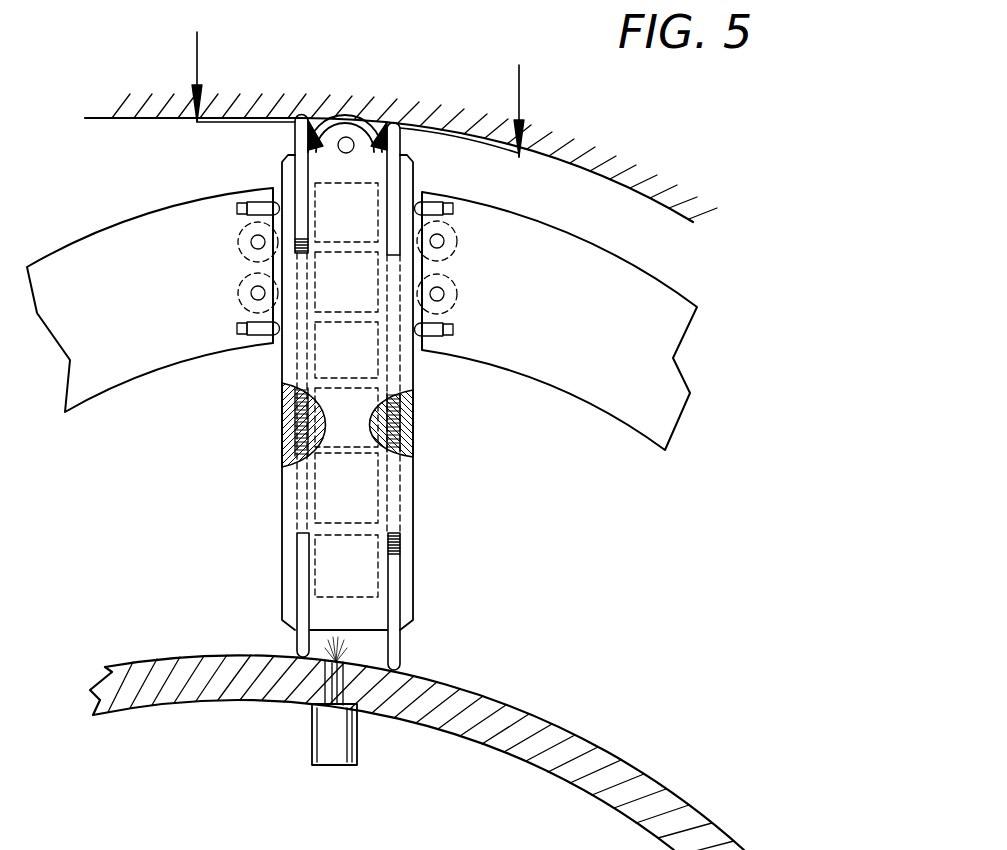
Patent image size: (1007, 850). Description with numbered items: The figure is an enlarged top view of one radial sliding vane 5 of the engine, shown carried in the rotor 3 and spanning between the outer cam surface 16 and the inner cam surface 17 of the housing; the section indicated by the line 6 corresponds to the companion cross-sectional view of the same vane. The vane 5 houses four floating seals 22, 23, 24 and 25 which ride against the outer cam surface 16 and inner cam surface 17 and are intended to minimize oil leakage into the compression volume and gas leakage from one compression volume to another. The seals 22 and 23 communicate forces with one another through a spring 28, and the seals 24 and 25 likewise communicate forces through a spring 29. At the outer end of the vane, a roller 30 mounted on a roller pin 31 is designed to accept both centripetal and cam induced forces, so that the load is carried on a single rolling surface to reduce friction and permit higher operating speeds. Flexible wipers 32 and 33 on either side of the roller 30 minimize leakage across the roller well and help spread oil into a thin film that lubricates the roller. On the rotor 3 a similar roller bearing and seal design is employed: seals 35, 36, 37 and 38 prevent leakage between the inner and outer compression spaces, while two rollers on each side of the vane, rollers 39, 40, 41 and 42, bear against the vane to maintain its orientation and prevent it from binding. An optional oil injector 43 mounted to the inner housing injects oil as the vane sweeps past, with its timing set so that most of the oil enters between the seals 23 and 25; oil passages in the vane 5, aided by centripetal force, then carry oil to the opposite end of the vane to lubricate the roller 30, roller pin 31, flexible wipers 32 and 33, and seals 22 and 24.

The rotor 3 is at (153, 375).
The vane 5 is at (415, 525).
The section line 6- 6 is at (358, 94).
The outer cam surface 16 is at (140, 660).
The inner cam surface 17 is at (125, 120).
The floating seal 22 is at (295, 140).
The floating seal 23 is at (293, 640).
The floating seal 24 is at (400, 143).
The floating seal 25 is at (402, 648).
The spring 28 is at (297, 422).
The spring 29 is at (413, 430).
The roller 30 is at (343, 113).
The roller pin 31 is at (346, 154).
The flexible wiper 32 is at (315, 140).
The flexible wiper 33 is at (383, 140).
The rotor seal 35 is at (257, 203).
The rotor seal 36 is at (250, 333).
The rotor seal 37 is at (455, 207).
The rotor seal 38 is at (443, 343).
The rotor roller 39 is at (238, 242).
The rotor roller 40 is at (238, 294).
The rotor roller 41 is at (457, 240).
The rotor roller 42 is at (456, 302).
The oil injector 43 is at (312, 728).